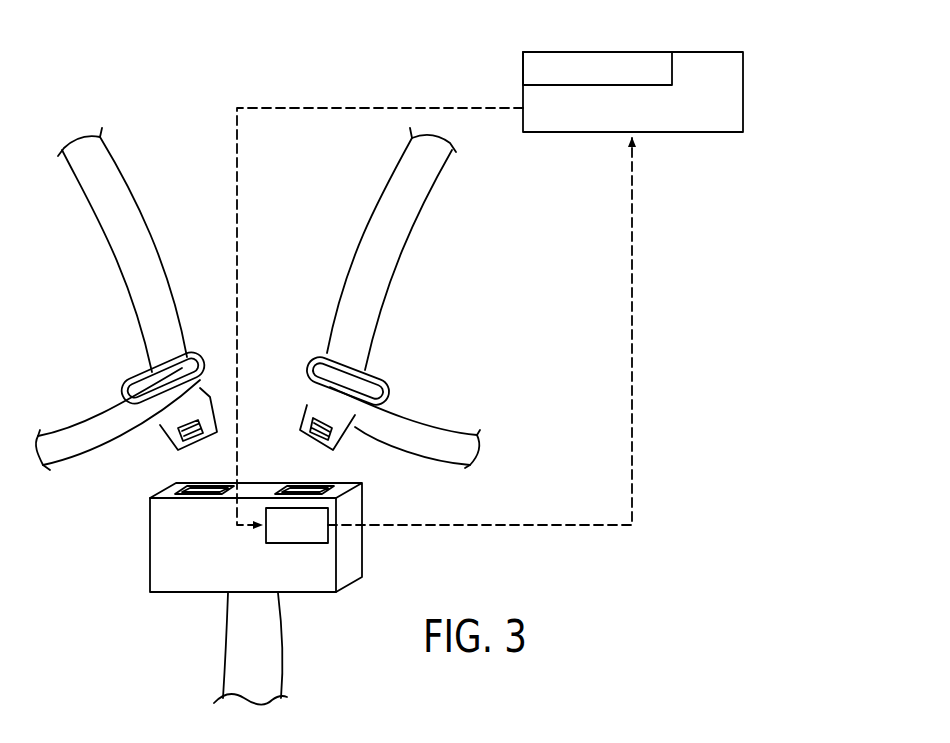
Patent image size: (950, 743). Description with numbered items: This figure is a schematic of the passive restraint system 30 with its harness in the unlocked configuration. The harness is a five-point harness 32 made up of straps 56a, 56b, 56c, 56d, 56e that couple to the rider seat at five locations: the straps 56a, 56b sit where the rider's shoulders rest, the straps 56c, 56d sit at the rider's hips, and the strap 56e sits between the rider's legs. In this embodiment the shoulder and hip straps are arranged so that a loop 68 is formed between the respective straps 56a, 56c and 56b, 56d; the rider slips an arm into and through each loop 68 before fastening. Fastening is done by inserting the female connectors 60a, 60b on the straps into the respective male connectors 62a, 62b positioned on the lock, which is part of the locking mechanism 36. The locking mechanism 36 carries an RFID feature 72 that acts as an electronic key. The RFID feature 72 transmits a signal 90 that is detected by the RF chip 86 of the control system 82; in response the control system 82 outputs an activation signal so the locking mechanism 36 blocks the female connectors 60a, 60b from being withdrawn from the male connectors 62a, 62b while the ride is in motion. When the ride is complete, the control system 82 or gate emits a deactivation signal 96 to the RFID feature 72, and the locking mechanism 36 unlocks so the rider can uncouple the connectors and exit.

The restraint system 30 is at (82, 262).
The 5-point harness 32 is at (412, 252).
The locking mechanism 36 is at (150, 532).
The strap 56a is at (148, 228).
The strap 56b is at (353, 237).
The strap 56c is at (98, 425).
The strap 56d is at (410, 428).
The strap 56e is at (268, 646).
The female connector 60a is at (200, 448).
The female connector 60b is at (317, 445).
The male connector 62a is at (198, 494).
The male connector 62b is at (317, 383).
The loop 68 is at (120, 294).
The radio frequency identification (RFID) feature 72 is at (302, 545).
The control system 82 is at (745, 95).
The RF chip 86 is at (674, 68).
The signal 90 is at (632, 337).
The deactivation signal 96 is at (383, 108).